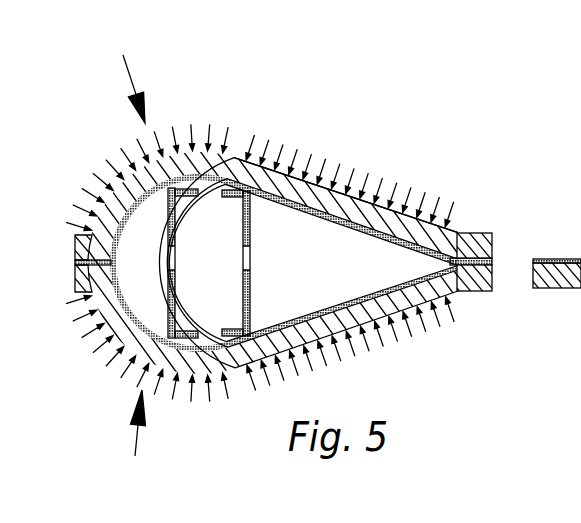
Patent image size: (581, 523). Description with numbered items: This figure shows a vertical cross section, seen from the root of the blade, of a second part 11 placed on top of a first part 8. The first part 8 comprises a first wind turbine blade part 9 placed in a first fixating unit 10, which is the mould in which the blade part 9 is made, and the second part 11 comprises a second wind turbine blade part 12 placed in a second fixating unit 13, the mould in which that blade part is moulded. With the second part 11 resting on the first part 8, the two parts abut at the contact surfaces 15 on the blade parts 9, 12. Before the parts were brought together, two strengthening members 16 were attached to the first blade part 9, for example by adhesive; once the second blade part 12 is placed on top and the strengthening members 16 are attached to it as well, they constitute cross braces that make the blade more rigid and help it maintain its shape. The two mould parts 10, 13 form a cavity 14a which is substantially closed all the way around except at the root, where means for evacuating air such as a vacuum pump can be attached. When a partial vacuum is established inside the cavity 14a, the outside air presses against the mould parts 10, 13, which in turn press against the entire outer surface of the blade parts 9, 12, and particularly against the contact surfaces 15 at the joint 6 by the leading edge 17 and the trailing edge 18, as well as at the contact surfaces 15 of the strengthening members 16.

The joint 6 is at (490, 291).
The first part 8 is at (134, 439).
The first wind turbine blade part 9 is at (143, 337).
The first fixating unit 10 is at (380, 307).
The second part 11 is at (260, 128).
The second wind turbine blade part 12 is at (200, 187).
The second fixating unit 13 is at (292, 182).
The cavity 14a is at (305, 253).
The contact surfaces 15 is at (90, 234).
The strengthening members 16 is at (173, 233).
The leading edge 17 is at (100, 293).
The trailing edge 18 is at (460, 265).